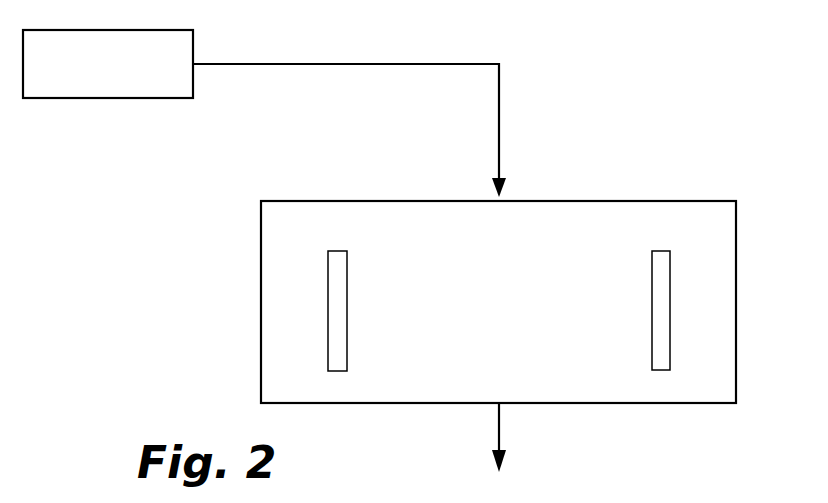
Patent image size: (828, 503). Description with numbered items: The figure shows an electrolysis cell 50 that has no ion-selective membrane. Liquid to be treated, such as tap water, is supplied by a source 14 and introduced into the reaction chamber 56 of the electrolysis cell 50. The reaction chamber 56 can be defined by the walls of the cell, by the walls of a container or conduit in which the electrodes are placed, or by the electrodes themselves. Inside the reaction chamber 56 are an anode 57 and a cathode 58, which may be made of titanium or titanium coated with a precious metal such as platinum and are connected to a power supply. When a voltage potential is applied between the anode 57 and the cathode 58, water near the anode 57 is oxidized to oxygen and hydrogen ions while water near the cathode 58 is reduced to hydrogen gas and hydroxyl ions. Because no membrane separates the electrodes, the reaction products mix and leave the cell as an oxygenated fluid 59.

The source 14 is at (107, 98).
The electrolysis cell 50 is at (448, 302).
The reaction chamber 56 is at (506, 344).
The anode 57 is at (347, 301).
The cathode 58 is at (652, 303).
The oxygenated fluid 59 is at (499, 423).